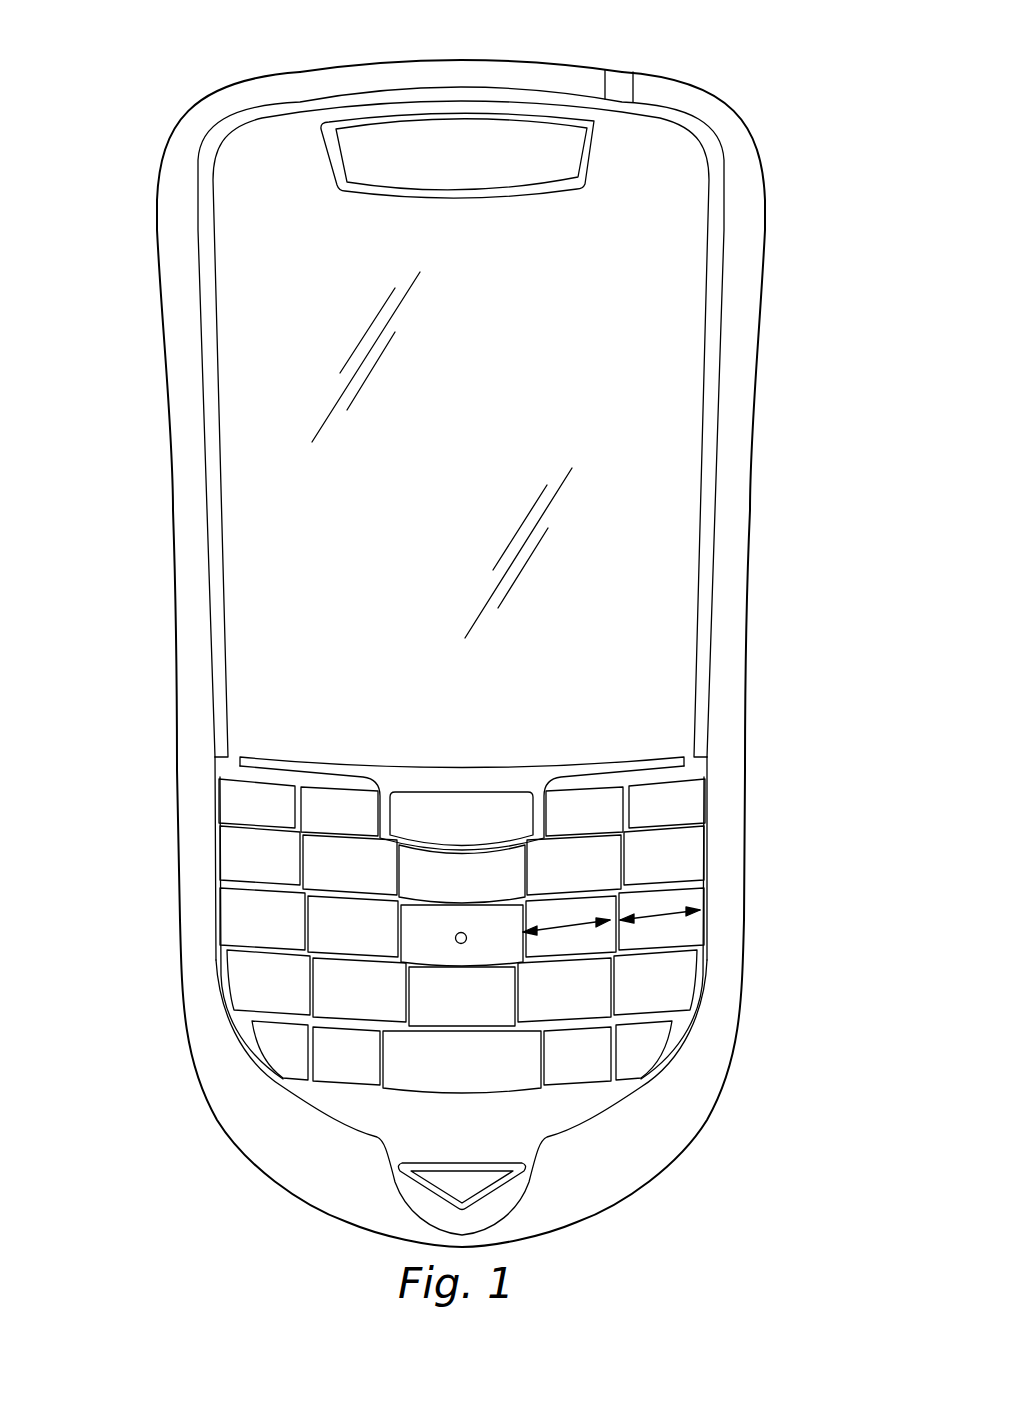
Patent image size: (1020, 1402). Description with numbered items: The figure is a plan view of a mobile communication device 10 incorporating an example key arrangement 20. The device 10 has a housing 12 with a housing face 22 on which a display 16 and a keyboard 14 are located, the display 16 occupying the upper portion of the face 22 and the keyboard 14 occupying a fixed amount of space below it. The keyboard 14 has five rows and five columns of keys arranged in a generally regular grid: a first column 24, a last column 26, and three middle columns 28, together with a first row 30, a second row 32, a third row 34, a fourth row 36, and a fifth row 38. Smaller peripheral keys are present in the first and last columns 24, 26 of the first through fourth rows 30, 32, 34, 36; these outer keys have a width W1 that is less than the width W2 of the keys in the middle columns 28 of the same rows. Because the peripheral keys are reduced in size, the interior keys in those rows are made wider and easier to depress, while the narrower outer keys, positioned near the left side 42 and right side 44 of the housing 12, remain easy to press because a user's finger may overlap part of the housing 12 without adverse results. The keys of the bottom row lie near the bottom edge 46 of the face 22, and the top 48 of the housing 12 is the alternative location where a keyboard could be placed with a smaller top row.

The mobile communication device 10 is at (783, 93).
The housing 12 is at (454, 653).
The keyboard 14 is at (464, 886).
The display 16 is at (587, 397).
The key arrangement 20 is at (718, 900).
The housing face 22 is at (627, 1160).
The first column 24 is at (253, 793).
The last column 26 is at (660, 785).
The middle columns 28 is at (343, 797).
The first row 30 is at (393, 765).
The second row 32 is at (223, 850).
The third row 34 is at (230, 913).
The fourth row 36 is at (235, 977).
The fifth row 38 is at (260, 1043).
The left side 42 is at (172, 567).
The right side 44 is at (747, 693).
The bottom edge 46 is at (350, 1220).
The top 48 is at (443, 60).
The width W1 is at (663, 913).
The width W2 is at (573, 927).